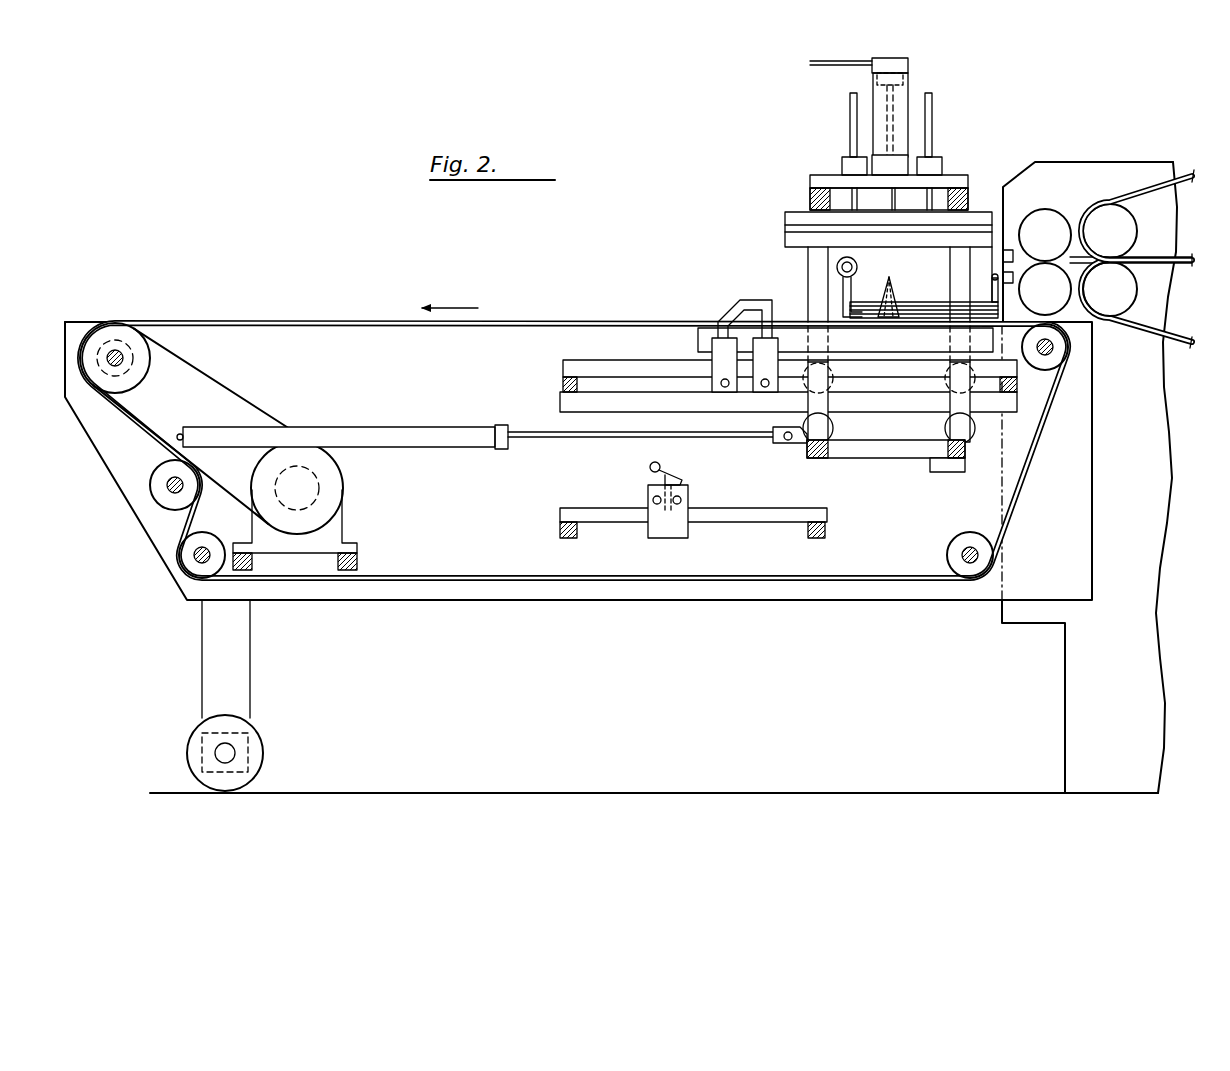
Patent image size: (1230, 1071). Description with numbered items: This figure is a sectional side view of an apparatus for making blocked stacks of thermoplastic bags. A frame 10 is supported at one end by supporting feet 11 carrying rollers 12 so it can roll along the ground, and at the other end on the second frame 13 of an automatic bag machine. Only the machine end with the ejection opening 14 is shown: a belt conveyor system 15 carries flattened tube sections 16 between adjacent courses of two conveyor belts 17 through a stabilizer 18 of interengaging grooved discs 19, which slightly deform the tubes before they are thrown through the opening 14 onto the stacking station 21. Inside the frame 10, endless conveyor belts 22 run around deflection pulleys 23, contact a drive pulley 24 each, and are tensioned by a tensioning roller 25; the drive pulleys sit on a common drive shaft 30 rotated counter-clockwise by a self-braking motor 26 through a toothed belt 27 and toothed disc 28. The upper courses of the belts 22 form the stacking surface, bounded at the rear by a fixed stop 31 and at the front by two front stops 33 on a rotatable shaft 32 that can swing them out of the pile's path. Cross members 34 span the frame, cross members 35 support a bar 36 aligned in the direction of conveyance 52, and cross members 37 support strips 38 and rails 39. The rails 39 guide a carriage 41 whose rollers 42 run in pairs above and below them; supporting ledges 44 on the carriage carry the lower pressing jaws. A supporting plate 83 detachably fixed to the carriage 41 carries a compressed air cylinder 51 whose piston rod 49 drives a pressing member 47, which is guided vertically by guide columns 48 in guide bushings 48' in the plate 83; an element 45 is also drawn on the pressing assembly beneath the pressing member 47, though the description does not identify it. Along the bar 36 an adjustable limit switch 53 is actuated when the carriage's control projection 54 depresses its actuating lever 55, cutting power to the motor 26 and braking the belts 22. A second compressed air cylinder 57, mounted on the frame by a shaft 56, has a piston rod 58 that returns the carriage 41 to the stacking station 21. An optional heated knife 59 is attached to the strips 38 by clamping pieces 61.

The frame 10 is at (132, 478).
The supporting feet 11 is at (232, 668).
The rollers 12 is at (252, 740).
The second frame 13 is at (1089, 168).
The opening 14 is at (1003, 260).
The belt conveyor system 15 is at (1147, 222).
The flattened tube sections 16 is at (889, 277).
The conveyor belts 17 is at (1140, 190).
The stabilizer 18 is at (1052, 207).
The grooved discs 19 is at (1030, 222).
The stacking station 21 is at (872, 262).
The conveyor belts 22 is at (313, 322).
The deflection pulleys 23 is at (188, 577).
The drive pulley 24 is at (137, 334).
The tensioning roller 25 is at (163, 498).
The self-braking motor 26 is at (330, 486).
The toothed belt 27 is at (175, 368).
The toothed disc 28 is at (125, 313).
The drive shaft 30 is at (108, 350).
The fixed stop 31 is at (996, 300).
The shaft 32 is at (835, 268).
The front stops 33 is at (843, 290).
The cross members 34 is at (333, 565).
The cross members 35 is at (560, 532).
The bar 36 is at (733, 508).
The cross members 37 is at (563, 385).
The strips 38 is at (603, 365).
The rails 39 is at (623, 400).
The carriage 41 is at (965, 452).
The rollers 42 is at (940, 385).
The supporting ledges 44 is at (808, 407).
The platen 45 is at (790, 233).
The pressing member 47 is at (790, 218).
The vertical guide columns 48 is at (891, 121).
The guide bushings 48' is at (892, 141).
The piston rod 49 is at (895, 98).
The compressed air cylinder 51 is at (905, 128).
The direction of conveyance 52 is at (458, 308).
The adjustable limit switch 53 is at (648, 490).
The control projection 54 is at (905, 458).
The actuating lever 55 is at (655, 463).
The shaft 56 is at (176, 438).
The second compressed air cylinder 57 is at (448, 425).
The piston rod 58 is at (552, 440).
The knife 59 is at (732, 316).
The clamping pieces 61 is at (717, 365).
The supporting plate 83 is at (823, 180).